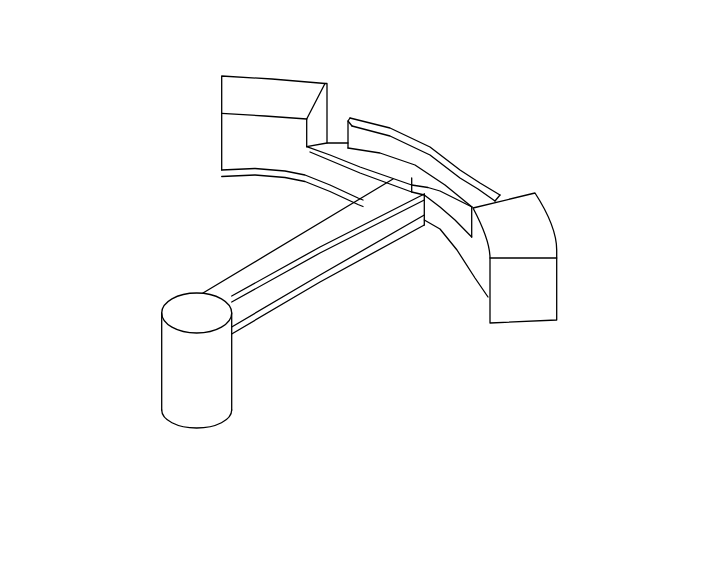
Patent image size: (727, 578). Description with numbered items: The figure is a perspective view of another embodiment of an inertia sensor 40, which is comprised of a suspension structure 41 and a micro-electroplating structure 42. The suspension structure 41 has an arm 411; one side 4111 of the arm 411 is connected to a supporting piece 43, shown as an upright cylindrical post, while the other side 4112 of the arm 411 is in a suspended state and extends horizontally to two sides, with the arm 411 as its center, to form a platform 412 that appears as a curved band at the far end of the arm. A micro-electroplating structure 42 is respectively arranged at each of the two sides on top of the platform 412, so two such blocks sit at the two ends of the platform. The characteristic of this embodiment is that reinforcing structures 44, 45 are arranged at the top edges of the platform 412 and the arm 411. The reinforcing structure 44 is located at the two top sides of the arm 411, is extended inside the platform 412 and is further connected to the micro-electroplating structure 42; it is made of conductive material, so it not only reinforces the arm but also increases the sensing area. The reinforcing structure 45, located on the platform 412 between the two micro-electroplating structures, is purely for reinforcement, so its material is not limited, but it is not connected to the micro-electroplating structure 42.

The inertia sensor 40 is at (166, 173).
The suspension structure 41 is at (475, 370).
The arm 411 is at (338, 277).
The one side of the arm 4111 is at (256, 326).
The another side of the arm 4112 is at (413, 232).
The platform 412 is at (453, 250).
The micro-electroplating structure 42 is at (270, 82).
The supporting piece 43 is at (160, 355).
The reinforcing structure 44 is at (238, 273).
The reinforcing structure 45 is at (426, 146).